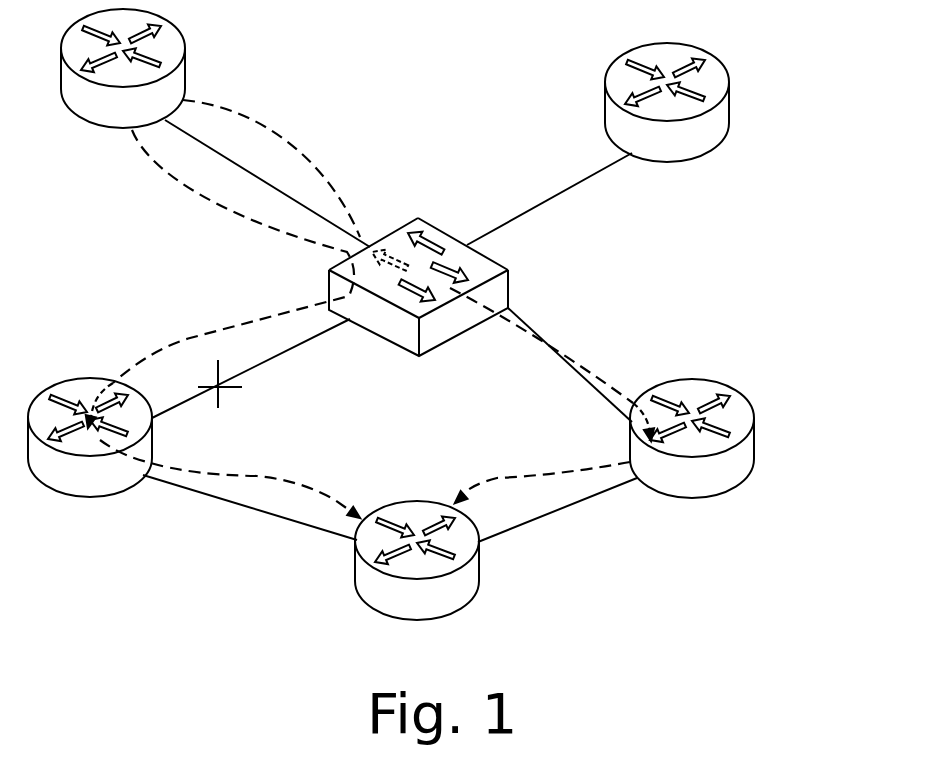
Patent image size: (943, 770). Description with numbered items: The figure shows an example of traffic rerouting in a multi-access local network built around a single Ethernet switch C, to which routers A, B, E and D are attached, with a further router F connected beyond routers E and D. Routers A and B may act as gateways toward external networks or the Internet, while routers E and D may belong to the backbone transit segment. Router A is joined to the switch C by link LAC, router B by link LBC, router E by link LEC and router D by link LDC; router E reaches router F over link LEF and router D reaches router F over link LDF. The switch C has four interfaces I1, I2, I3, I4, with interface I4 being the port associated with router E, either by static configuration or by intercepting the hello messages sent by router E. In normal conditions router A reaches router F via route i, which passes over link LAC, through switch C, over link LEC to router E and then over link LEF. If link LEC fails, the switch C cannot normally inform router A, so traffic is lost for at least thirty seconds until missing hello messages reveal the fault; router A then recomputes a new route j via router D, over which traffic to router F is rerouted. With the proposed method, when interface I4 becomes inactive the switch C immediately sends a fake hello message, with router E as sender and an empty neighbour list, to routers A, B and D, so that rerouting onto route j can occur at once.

The router A is at (123, 83).
The router B is at (667, 118).
The switch C is at (418, 314).
The router D is at (692, 456).
The router E is at (90, 457).
The router F is at (429, 560).
The link LAC is at (252, 172).
The link LBC is at (550, 198).
The link LEC is at (220, 390).
The link LDC is at (538, 368).
The link LEF is at (245, 506).
The link LDF is at (545, 515).
The interface I1 is at (373, 234).
The interface I2 is at (463, 235).
The interface I3 is at (463, 317).
The interface I4 is at (374, 315).
The route i is at (250, 322).
The route j is at (552, 340).